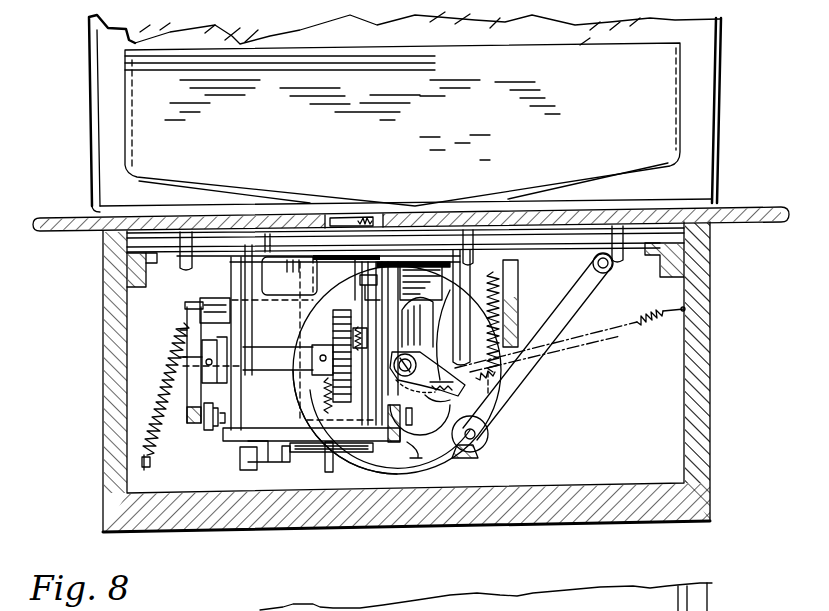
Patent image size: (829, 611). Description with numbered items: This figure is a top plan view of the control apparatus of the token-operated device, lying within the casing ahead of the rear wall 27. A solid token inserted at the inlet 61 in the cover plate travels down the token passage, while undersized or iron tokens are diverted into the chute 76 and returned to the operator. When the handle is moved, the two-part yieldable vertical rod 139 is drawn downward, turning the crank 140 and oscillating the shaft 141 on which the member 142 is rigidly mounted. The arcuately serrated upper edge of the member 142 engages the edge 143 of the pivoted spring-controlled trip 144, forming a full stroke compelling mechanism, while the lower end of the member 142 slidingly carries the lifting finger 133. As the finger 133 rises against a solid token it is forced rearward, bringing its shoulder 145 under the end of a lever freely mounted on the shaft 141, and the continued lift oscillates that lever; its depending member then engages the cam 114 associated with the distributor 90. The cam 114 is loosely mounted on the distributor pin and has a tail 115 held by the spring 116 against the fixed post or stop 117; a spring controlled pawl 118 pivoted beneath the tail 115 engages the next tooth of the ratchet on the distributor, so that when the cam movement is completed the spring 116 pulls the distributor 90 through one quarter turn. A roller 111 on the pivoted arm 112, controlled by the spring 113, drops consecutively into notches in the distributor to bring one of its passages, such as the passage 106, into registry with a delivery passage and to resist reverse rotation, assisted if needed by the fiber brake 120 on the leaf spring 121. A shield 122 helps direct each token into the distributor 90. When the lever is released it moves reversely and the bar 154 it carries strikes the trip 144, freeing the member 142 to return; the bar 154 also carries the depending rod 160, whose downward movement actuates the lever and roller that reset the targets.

The rear wall 27 is at (517, 512).
The inlet 61 is at (332, 214).
The chute 76 is at (283, 293).
The distributor 90 is at (427, 470).
The passage 106 is at (418, 448).
The roller 111 is at (455, 455).
The pivoted arm 112 is at (520, 385).
The spring 113 is at (455, 362).
The cam 114 is at (406, 423).
The tail 115 is at (425, 402).
The spring 116 is at (620, 335).
The fixed post or stop 117 is at (470, 300).
The spring controlled pawl 118 is at (437, 390).
The brake 120 is at (518, 309).
The leaf spring 121 is at (520, 272).
The shield 122 is at (437, 356).
The lifting finger 133 is at (352, 268).
The vertical rod 139 is at (210, 431).
The crank 140 is at (190, 400).
The shaft 141 is at (281, 352).
The member 142 is at (334, 341).
The edge 143 is at (316, 395).
The trip 144 is at (334, 458).
The shoulder 145 is at (289, 276).
The bar 154 is at (281, 426).
The rod 160 is at (252, 464).